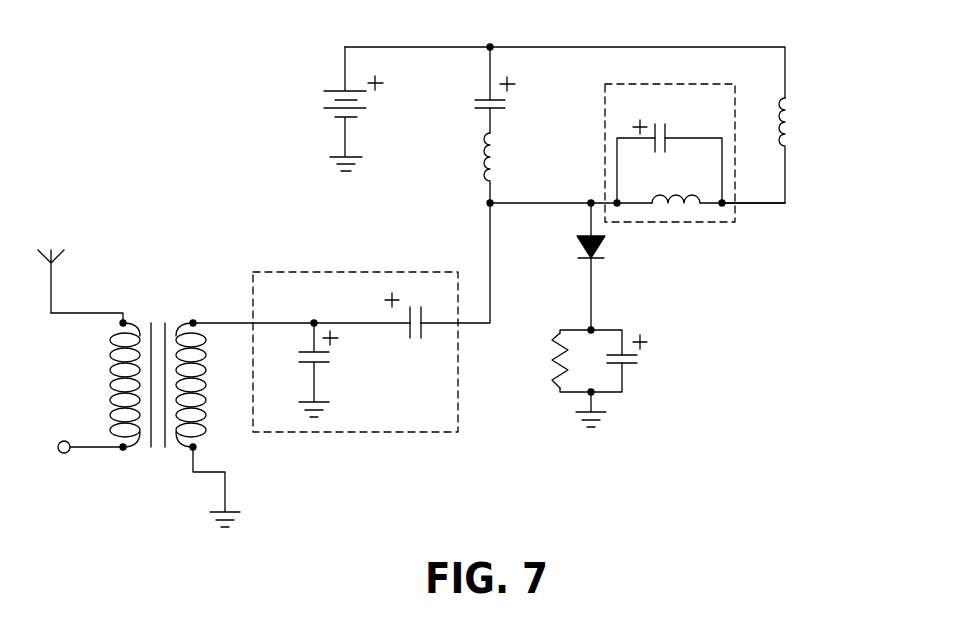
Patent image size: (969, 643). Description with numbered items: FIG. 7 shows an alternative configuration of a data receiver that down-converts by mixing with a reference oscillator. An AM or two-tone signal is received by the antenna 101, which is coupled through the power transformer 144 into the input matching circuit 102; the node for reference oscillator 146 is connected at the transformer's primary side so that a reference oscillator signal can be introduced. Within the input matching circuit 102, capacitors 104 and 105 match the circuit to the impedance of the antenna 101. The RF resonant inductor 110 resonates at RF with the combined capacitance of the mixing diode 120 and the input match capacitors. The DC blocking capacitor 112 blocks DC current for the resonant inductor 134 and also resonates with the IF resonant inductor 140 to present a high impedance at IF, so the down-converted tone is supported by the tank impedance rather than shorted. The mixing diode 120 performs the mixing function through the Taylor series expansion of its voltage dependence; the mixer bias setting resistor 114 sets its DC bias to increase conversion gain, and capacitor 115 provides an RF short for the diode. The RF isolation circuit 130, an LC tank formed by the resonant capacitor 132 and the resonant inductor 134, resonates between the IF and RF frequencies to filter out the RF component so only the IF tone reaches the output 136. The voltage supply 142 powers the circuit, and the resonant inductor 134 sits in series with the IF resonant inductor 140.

The antenna 101 is at (60, 242).
The input matching circuit 102 is at (355, 352).
The capacitor 104 is at (300, 389).
The capacitor 105 is at (413, 298).
The RF resonant inductor 110 is at (467, 169).
The DC blocking capacitor 112 is at (467, 103).
The mixer bias setting resistor 114 is at (548, 372).
The capacitor 115 is at (643, 358).
The mixing diode 120 is at (618, 254).
The RF isolation circuit 130 is at (670, 153).
The resonant capacitor 132 is at (658, 123).
The resonant inductor 134 is at (706, 217).
The output 136 is at (791, 205).
The IF resonant inductor 140 is at (791, 120).
The voltage supply 142 is at (317, 104).
The power transformer 144 is at (162, 298).
The node for reference oscillator 146 is at (69, 462).